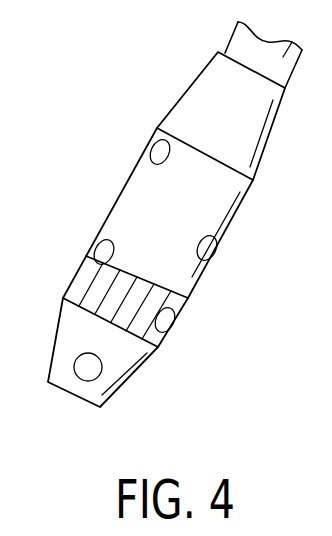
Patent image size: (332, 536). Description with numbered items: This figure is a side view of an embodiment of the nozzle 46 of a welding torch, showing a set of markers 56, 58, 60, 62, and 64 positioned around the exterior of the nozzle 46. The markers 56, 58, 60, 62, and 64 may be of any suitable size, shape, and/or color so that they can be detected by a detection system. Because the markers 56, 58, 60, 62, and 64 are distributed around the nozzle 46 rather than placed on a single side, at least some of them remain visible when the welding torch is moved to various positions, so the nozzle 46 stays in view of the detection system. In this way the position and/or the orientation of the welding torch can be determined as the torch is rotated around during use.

The nozzle 46 is at (217, 202).
The marker 56 is at (157, 148).
The marker 58 is at (207, 248).
The marker 60 is at (106, 250).
The marker 62 is at (166, 322).
The marker 64 is at (88, 367).